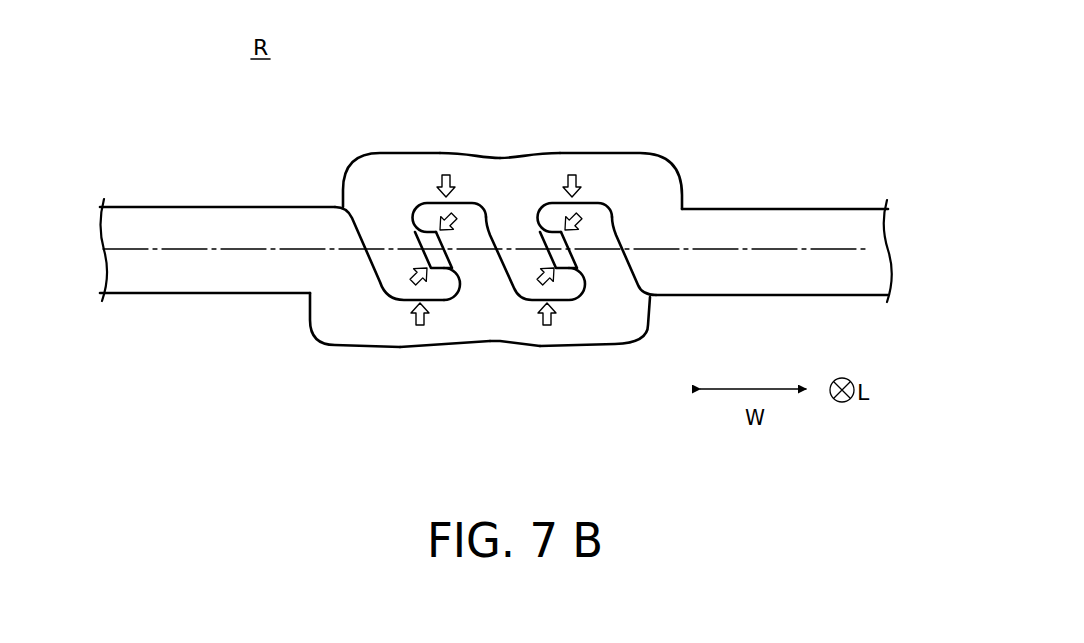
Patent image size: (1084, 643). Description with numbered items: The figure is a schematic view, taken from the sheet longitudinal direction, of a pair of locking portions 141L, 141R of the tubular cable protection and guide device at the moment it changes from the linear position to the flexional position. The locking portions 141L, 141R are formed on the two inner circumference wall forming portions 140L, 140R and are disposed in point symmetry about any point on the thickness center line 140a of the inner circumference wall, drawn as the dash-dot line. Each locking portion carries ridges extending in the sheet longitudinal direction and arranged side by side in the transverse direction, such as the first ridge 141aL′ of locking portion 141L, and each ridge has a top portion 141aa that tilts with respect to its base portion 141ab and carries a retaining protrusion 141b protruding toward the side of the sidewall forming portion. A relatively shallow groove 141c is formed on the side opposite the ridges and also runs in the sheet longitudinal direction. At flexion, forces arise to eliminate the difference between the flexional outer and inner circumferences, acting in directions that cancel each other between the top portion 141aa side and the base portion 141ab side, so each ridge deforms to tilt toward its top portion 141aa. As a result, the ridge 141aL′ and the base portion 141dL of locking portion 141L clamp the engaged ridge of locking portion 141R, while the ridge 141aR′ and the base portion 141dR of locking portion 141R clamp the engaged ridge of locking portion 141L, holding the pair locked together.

The thickness center line 140a is at (277, 245).
The inner circumference wall forming portion 140L is at (251, 282).
The inner circumference wall forming portion 140R is at (824, 224).
The locking portion 141L is at (384, 365).
The locking portion 141R is at (704, 157).
The ridge 141aL′ is at (593, 221).
The ridge 141aR′ is at (398, 274).
The top portion 141aa is at (603, 225).
The base portion 141ab is at (620, 313).
The retaining protrusion 141b is at (555, 215).
The groove 141c is at (498, 342).
The base portion 141dL is at (448, 330).
The base portion 141dR is at (632, 157).